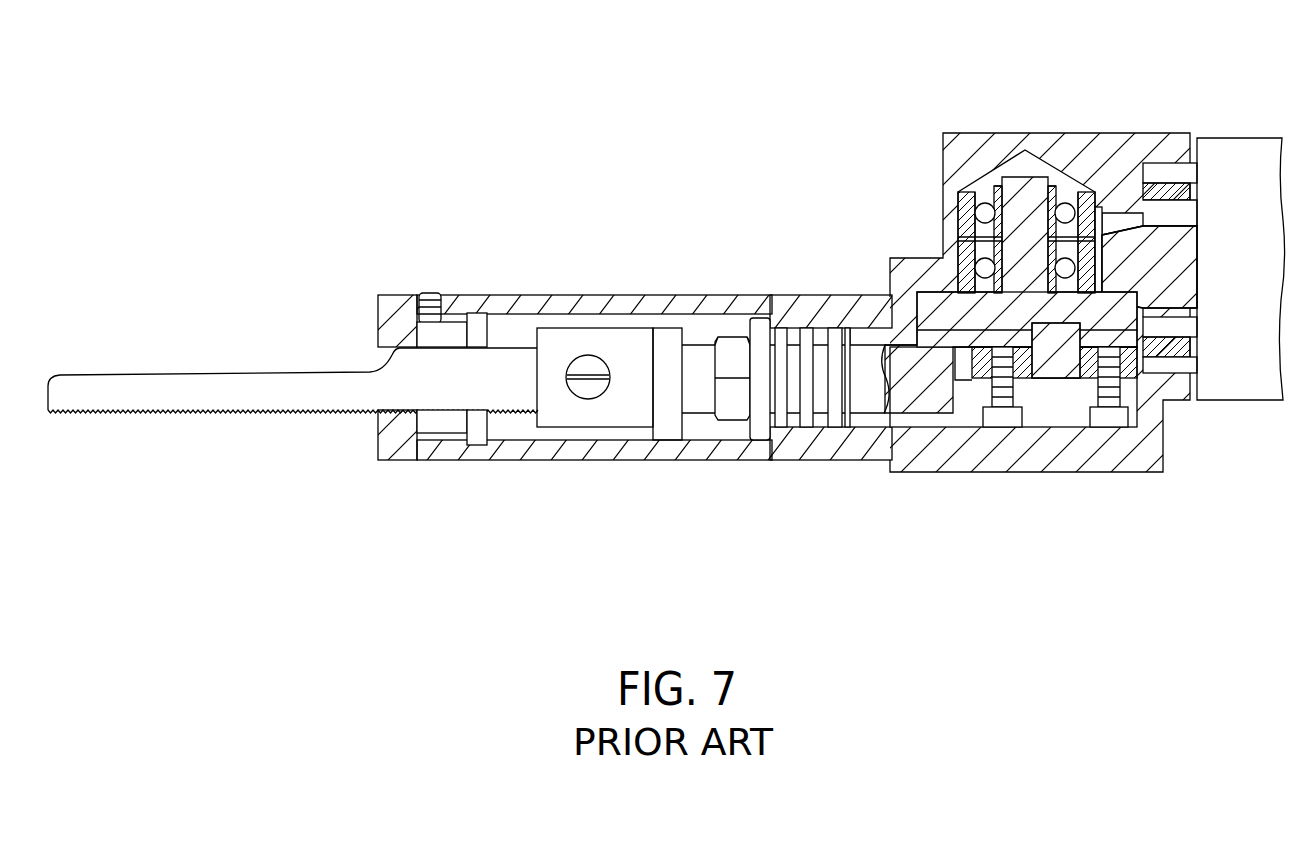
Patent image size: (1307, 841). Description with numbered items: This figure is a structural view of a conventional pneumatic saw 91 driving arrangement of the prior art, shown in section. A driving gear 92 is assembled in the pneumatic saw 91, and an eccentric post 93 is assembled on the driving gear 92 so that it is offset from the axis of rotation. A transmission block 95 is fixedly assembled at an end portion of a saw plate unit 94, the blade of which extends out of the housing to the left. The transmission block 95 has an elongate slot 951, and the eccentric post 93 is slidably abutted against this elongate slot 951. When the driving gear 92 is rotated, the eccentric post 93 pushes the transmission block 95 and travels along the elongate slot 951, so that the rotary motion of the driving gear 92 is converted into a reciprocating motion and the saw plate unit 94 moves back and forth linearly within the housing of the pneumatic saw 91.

The pneumatic saw 91 is at (977, 130).
The driving gear 92 is at (947, 322).
The eccentric post 93 is at (1062, 370).
The saw plate unit 94 is at (864, 398).
The transmission block 95 is at (1051, 467).
The elongate slot 951 is at (1060, 367).